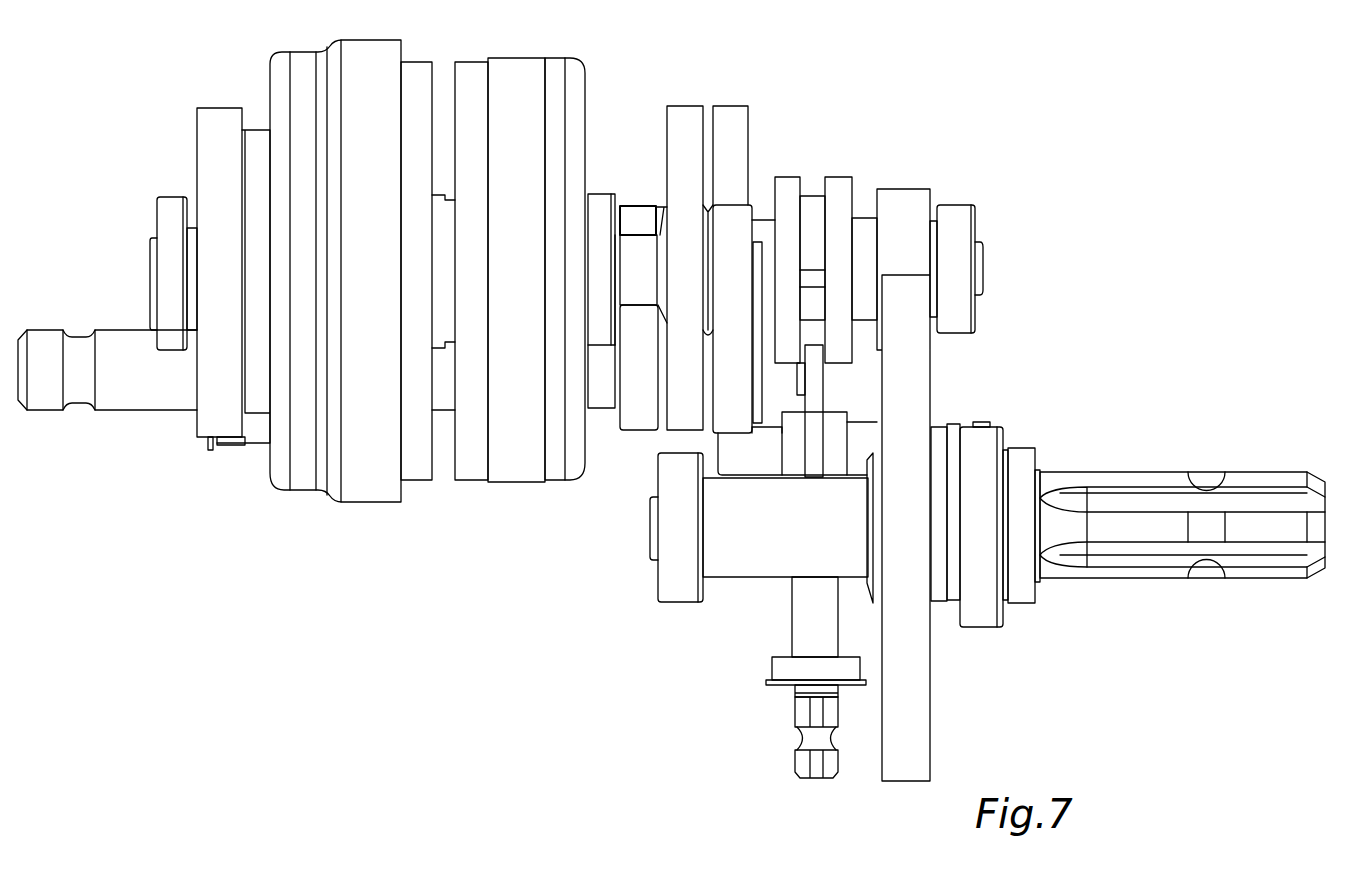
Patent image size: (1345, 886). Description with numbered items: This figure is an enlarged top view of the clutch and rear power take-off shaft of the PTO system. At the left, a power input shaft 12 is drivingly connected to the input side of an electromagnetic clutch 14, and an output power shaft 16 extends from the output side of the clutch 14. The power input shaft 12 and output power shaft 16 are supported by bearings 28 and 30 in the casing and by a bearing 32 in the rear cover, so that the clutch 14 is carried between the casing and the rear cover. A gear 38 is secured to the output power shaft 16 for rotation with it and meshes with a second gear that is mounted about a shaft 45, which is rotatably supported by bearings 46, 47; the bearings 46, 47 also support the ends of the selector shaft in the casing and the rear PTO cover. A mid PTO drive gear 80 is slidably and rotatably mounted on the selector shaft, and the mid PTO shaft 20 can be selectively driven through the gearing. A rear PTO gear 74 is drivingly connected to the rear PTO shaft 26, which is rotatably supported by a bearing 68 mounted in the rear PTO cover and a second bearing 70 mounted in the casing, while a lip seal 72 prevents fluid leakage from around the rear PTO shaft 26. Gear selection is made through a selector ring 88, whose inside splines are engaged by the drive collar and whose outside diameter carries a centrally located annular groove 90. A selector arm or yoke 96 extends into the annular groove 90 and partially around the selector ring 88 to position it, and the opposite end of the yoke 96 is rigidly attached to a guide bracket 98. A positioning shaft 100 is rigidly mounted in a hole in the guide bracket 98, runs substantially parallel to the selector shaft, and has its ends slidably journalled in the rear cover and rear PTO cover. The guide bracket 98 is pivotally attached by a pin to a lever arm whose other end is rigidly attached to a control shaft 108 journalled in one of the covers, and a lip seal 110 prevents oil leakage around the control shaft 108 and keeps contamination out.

The power input shaft 12 is at (193, 227).
The electromagnetic clutch 14 is at (285, 490).
The output power shaft 16 is at (630, 248).
The mid PTO shaft 20 is at (112, 350).
The rear PTO shaft 26 is at (1117, 570).
The bearing 28 is at (168, 215).
The bearing 30 is at (600, 266).
The bearing 32 is at (728, 220).
The gear 38 is at (682, 125).
The shaft 45 is at (984, 267).
The bearing 46 is at (642, 213).
The bearing 47 is at (960, 213).
The bearing 68 is at (983, 613).
The second bearing 70 is at (682, 588).
The lip seal 72 is at (1022, 590).
The rear PTO gear 74 is at (908, 758).
The mid PTO drive gear 80 is at (732, 118).
The selector ring 88 is at (837, 177).
The annular groove 90 is at (798, 182).
The selector arm or yoke 96 is at (818, 384).
The guide bracket 98 is at (798, 467).
The positioning shaft 100 is at (755, 457).
The control shaft 108 is at (792, 618).
The lip seal 110 is at (772, 665).